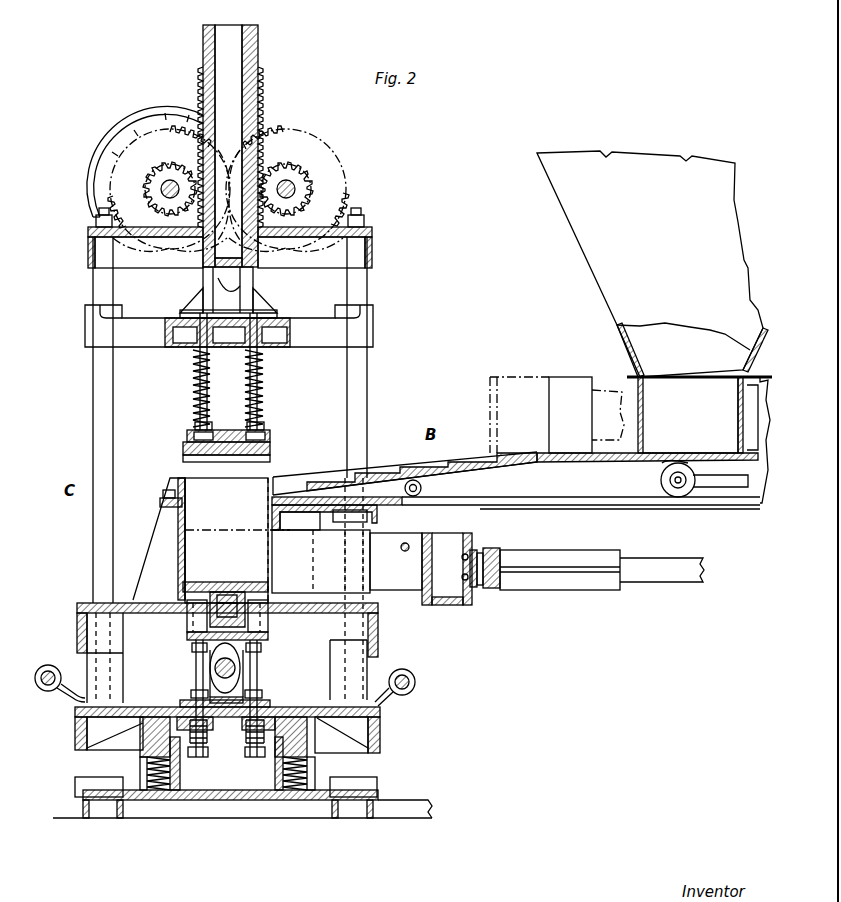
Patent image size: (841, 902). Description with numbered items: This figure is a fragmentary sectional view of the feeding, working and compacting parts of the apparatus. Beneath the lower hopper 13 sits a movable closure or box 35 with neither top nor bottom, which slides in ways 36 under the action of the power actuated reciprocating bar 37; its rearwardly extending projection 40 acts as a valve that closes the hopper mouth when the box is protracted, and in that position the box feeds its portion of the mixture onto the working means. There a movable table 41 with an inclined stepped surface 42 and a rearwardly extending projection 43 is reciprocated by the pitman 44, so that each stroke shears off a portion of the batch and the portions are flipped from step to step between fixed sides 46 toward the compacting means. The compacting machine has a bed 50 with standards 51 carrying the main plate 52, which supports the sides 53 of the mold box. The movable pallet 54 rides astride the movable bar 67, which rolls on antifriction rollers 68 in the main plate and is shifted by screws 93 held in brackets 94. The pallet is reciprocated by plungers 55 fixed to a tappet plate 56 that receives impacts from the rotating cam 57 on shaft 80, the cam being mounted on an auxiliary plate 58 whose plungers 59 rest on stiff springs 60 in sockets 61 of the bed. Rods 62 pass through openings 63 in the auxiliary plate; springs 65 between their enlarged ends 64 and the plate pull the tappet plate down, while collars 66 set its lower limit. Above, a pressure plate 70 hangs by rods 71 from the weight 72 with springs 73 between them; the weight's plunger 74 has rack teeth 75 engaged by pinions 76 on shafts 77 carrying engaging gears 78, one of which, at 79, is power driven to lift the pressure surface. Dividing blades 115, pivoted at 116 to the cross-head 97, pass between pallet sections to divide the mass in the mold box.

The lower hopper 13 is at (668, 247).
The movable closure or box 35 is at (633, 378).
The ways 36 is at (548, 376).
The power actuated reciprocating bar 37 is at (690, 582).
The rearwardly extending projection 40 is at (752, 376).
The movable table 41 is at (538, 455).
The inclined stepped surface 42 is at (380, 472).
The rearwardly extending projection 43 is at (621, 461).
The pitman 44 is at (732, 490).
The fixed sides 46 is at (329, 474).
The bed 50 is at (77, 798).
The standards 51 is at (367, 388).
The main plate 52 is at (80, 604).
The sides of mold box 53 is at (178, 566).
The movable bottom or pallet 54 is at (205, 582).
The vertically movable plungers 55 is at (187, 620).
The tappet plate 56 is at (268, 640).
The rotating cam 57 is at (261, 650).
The auxiliary plate 58 is at (270, 705).
The plungers 59 is at (145, 752).
The springs 60 is at (158, 803).
The sockets 61 is at (180, 776).
The rods 62 is at (196, 665).
The openings 63 is at (192, 704).
The enlarged ends 64 is at (208, 754).
The springs 65 is at (207, 735).
The collars 66 is at (191, 692).
The movable bar 67 is at (224, 592).
The antifriction rollers 68 is at (237, 597).
The pressure plate 70 is at (183, 448).
The rods 71 is at (193, 398).
The movable weight or plate 72 is at (328, 347).
The springs 73 is at (195, 424).
The plunger 74 is at (244, 292).
The rack teeth 75 is at (202, 88).
The pinions 76 is at (150, 174).
The shafts 77 is at (161, 190).
The engaging gears 78 is at (190, 136).
The power driven gear 79 is at (96, 162).
The shaft 80 is at (213, 662).
The screws 93 is at (38, 671).
The brackets 94 is at (70, 701).
The cross-head 97 is at (486, 588).
The dividing blades 115 is at (324, 518).
The pivot 116 is at (407, 551).